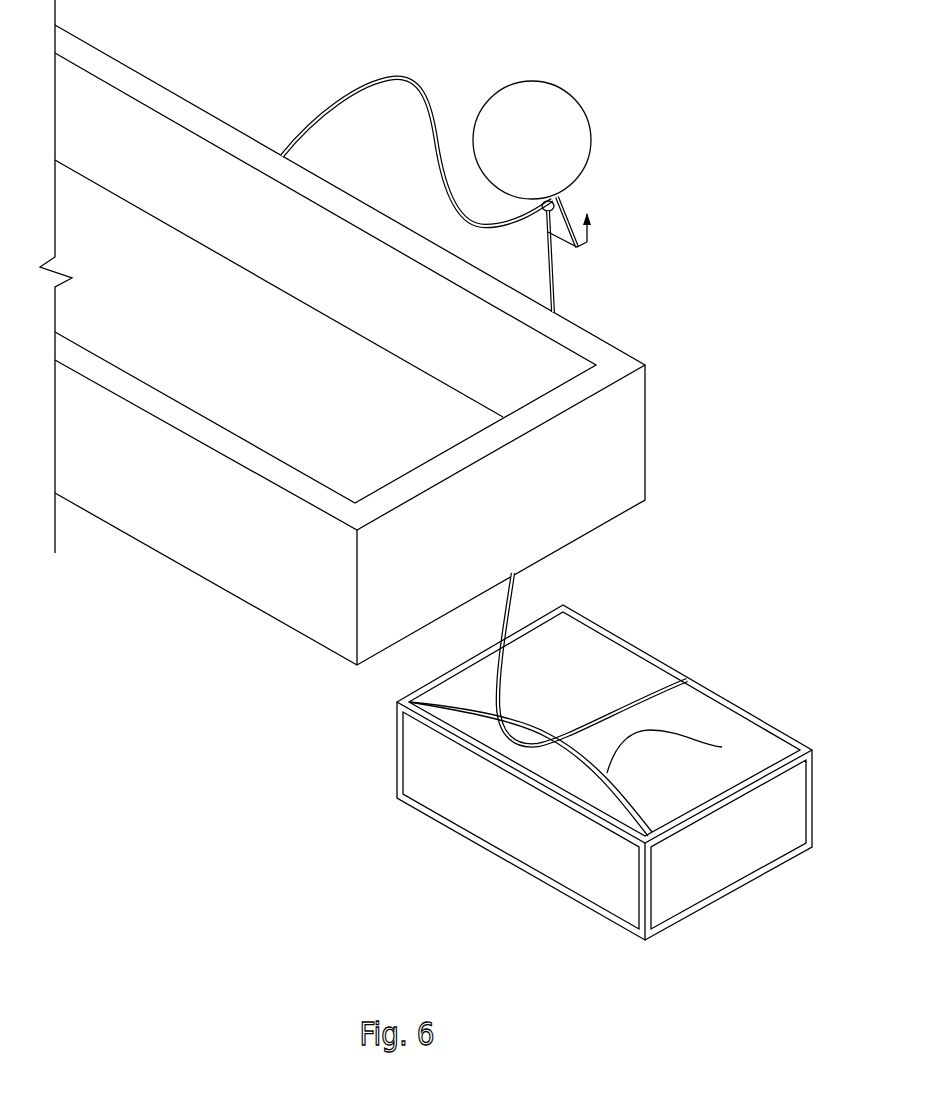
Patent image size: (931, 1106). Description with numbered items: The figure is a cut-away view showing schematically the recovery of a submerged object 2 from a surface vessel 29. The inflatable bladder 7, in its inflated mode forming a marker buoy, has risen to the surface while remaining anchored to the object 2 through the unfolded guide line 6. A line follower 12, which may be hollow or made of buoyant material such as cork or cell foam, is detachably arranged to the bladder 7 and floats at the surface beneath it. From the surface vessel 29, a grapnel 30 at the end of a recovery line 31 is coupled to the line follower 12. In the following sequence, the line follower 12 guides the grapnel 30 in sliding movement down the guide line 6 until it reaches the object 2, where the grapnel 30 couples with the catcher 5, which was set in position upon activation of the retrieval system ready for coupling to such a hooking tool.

The surface vessel 29 is at (153, 78).
The recovery line 31 is at (432, 135).
The inflatable bladder 7 is at (571, 178).
The line follower 12 is at (542, 223).
The grapnel 30 is at (594, 246).
The guide line 6 is at (509, 616).
The object 2 is at (689, 918).
The catcher 5 is at (722, 747).